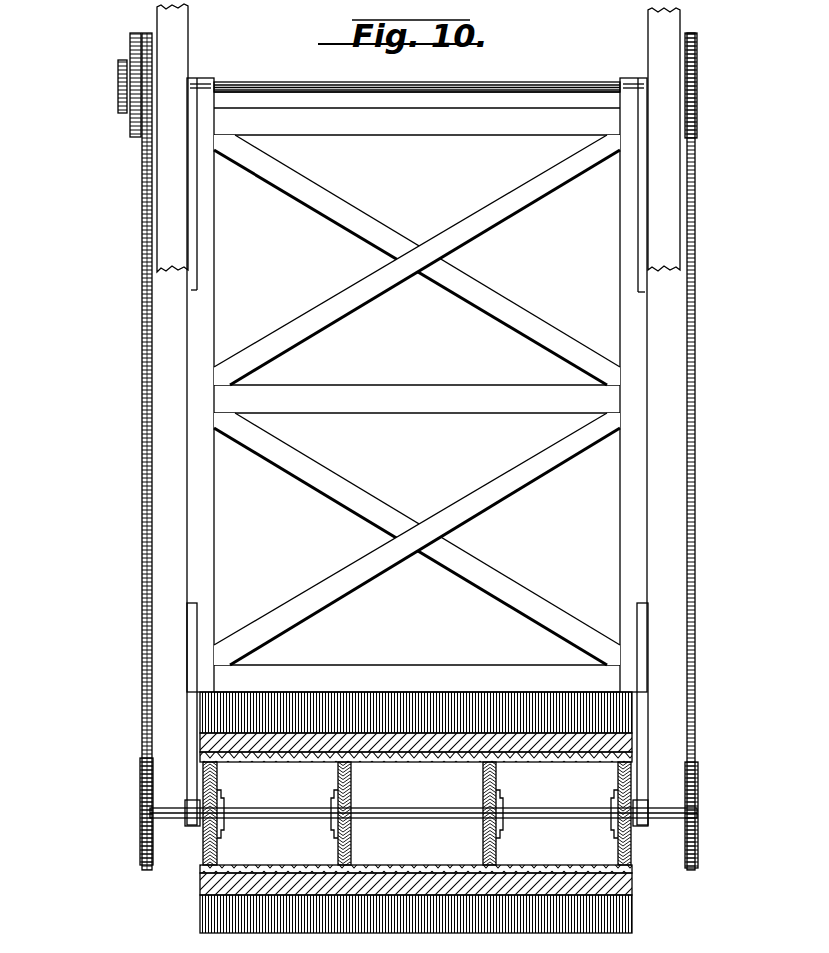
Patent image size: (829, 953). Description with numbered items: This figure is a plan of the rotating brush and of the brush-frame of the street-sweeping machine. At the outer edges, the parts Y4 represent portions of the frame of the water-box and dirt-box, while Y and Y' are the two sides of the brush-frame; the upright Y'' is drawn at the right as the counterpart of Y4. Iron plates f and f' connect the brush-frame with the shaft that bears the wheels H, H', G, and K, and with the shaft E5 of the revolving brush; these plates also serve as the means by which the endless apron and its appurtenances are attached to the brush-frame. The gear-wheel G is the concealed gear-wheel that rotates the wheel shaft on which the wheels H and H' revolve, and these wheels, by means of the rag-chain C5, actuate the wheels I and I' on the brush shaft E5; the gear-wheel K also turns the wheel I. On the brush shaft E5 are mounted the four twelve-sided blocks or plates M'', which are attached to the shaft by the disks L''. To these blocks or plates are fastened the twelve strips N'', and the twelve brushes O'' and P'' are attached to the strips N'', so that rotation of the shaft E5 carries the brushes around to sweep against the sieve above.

The side of the brush-frame Y' is at (200, 385).
The side of the brush-frame Y is at (633, 385).
The part of the frame of the water-box and dirt-box Y4 is at (172, 138).
The right upright column Y'' is at (664, 139).
The rag-chain C5 is at (417, 77).
The iron plate f' is at (181, 452).
The iron plate f is at (651, 452).
The wheel H' is at (122, 438).
The wheel H is at (704, 451).
The gear-wheel G is at (136, 140).
The gear-wheel K is at (118, 108).
The wheel I' is at (139, 829).
The wheel I is at (697, 830).
The shaft of the revolving brush E5 is at (423, 827).
The brush P'' is at (416, 682).
The brush O'' is at (441, 827).
The strip N'' is at (400, 827).
The twelve-sided block or plate M'' is at (417, 813).
The disk L'' is at (417, 810).